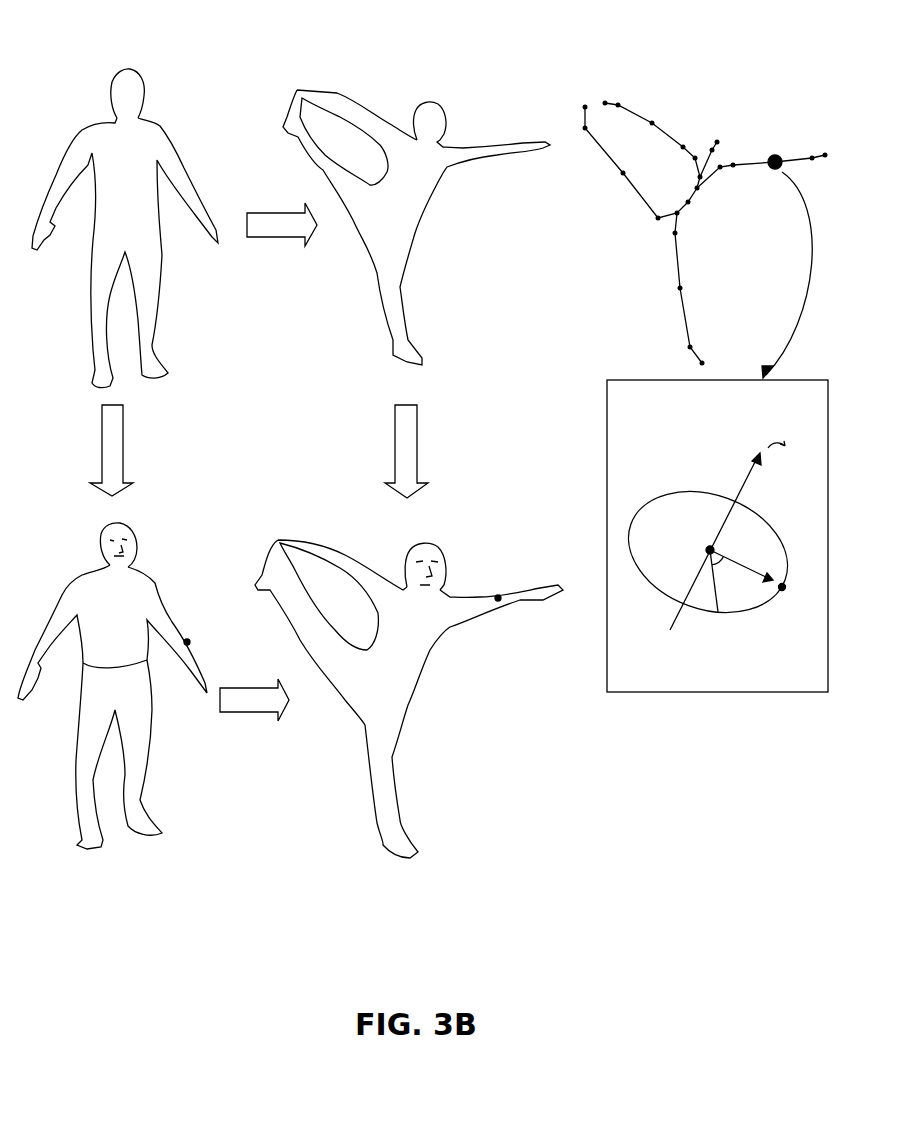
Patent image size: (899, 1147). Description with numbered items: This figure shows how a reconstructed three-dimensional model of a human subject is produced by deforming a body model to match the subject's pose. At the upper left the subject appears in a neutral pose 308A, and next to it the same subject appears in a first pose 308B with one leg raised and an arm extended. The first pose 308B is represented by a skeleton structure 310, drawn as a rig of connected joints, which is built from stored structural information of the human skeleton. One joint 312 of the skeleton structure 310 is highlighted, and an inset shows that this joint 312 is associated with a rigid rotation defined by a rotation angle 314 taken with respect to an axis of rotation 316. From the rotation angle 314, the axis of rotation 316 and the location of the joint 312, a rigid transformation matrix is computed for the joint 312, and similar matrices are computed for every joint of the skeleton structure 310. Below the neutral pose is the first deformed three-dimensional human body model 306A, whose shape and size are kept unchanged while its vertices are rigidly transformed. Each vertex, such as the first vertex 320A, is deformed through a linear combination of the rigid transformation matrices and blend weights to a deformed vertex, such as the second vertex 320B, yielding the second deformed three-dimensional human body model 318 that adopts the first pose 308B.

The neutral pose 308A is at (135, 72).
The first pose 308B is at (435, 103).
The skeleton structure 310 is at (663, 130).
The joint 312 is at (777, 158).
The rotation angle 314 is at (722, 567).
The axis of rotation 316 is at (747, 470).
The first deformed 3D human body model 306A is at (130, 527).
The first vertex 320A is at (192, 635).
The second deformed 3D human body model 318 is at (437, 550).
The second vertex 320B is at (502, 595).